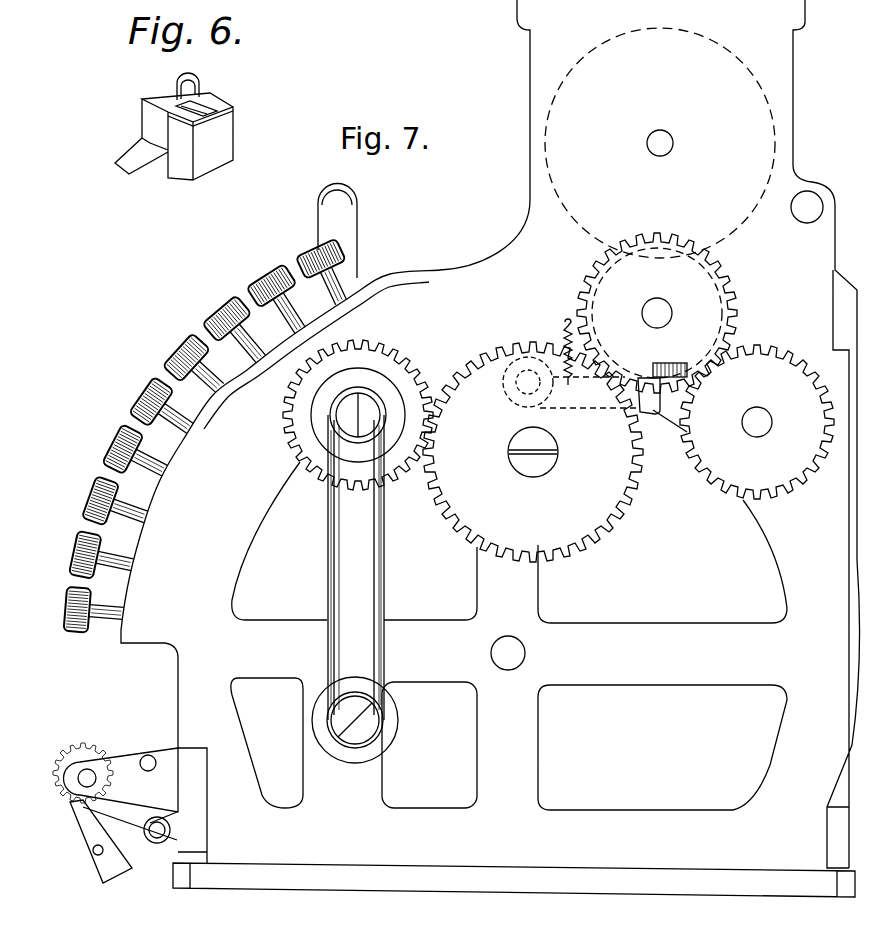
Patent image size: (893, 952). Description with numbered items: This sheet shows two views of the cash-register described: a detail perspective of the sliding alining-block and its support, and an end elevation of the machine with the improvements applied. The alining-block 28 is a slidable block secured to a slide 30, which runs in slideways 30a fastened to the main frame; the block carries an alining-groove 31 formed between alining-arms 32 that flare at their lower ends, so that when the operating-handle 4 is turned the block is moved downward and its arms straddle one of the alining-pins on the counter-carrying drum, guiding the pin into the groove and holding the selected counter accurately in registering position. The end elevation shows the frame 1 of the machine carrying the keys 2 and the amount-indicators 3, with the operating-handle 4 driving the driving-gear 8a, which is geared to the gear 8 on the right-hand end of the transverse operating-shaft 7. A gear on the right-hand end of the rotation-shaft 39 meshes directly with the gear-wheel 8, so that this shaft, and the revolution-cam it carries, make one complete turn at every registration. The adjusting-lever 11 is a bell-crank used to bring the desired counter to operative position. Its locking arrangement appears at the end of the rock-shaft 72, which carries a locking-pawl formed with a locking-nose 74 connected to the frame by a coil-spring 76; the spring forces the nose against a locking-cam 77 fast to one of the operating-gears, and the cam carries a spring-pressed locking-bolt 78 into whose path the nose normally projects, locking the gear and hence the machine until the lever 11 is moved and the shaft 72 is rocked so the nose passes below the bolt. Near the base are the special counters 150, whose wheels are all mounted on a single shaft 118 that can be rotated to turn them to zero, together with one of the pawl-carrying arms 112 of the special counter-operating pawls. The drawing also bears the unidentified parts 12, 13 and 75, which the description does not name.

In FIG. 7, the frame 1 is at (772, 21).
In FIG. 7, the keys 2 is at (228, 305).
In FIG. 7, the amount-indicators 3 is at (740, 70).
In FIG. 7, the operating-handle 4 is at (330, 532).
In FIG. 7, the transverse operating-shaft 7 is at (657, 298).
In FIG. 7, the gear 8 is at (594, 290).
In FIG. 7, the driving-gear 8a is at (297, 401).
In FIG. 7, the adjusting-lever 11 is at (322, 236).
In FIG. 7, the gear 12 is at (533, 452).
In FIG. 7, the key plate 13 is at (305, 336).
In FIG. 6, the alining-block 28 is at (140, 118).
In FIG. 6, the slide 30 is at (206, 101).
In FIG. 6, the slideways 30a is at (225, 113).
In FIG. 6, the alining-groove 31 is at (170, 95).
In FIG. 6, the alining-arms 32 is at (140, 165).
In FIG. 7, the rotation-shaft 39 is at (757, 407).
In FIG. 7, the rock-shaft 72 is at (528, 382).
In FIG. 7, the locking-nose 74 is at (642, 370).
In FIG. 7, the link 75 is at (618, 382).
In FIG. 7, the coil-spring 76 is at (563, 336).
In FIG. 7, the locking-cam 77 is at (728, 290).
In FIG. 7, the spring-pressed locking-bolt 78 is at (645, 368).
In FIG. 7, the pawl-carrying arms 112 is at (108, 868).
In FIG. 7, the shaft 118 is at (100, 765).
In FIG. 7, the special counters 150 is at (80, 752).